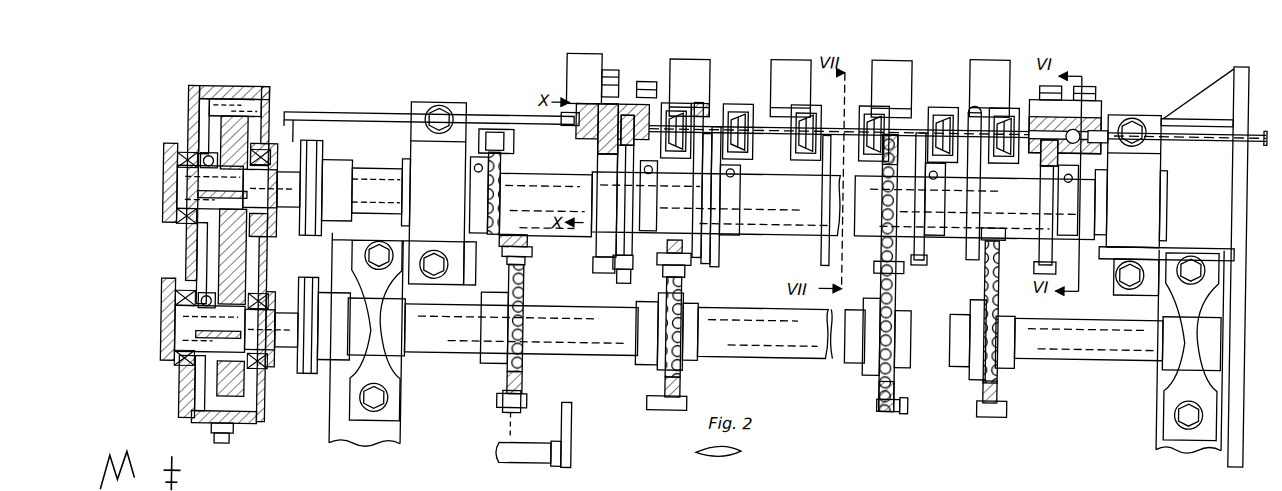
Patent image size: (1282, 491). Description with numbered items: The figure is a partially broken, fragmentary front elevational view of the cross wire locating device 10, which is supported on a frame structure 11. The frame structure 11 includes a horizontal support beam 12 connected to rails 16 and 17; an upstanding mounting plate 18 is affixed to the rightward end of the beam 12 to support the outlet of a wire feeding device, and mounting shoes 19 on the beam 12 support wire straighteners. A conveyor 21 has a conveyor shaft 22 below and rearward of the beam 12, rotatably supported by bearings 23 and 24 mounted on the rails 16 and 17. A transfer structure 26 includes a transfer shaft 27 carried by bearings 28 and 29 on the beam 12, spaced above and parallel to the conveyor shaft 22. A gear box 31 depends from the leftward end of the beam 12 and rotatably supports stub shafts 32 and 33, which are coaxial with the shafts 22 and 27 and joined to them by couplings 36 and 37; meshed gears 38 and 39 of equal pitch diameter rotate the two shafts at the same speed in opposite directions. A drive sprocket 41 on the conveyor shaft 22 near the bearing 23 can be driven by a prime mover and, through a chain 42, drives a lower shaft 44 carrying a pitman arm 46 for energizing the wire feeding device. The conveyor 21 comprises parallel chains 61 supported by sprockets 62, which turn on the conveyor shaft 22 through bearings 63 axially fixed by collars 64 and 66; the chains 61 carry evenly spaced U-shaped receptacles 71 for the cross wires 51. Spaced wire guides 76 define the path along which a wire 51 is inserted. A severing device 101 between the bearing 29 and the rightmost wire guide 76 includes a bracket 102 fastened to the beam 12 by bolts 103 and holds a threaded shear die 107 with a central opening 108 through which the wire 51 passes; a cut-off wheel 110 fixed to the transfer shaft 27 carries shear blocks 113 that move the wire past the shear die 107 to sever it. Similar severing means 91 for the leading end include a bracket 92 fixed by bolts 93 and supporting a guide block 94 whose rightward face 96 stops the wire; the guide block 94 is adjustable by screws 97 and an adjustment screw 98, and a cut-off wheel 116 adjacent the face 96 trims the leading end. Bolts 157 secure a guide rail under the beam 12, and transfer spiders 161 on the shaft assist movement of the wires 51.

The cross wire locating device 10 is at (1178, 52).
The frame structure 11 is at (332, 106).
The support beam 12 is at (372, 117).
The rail 16 is at (340, 428).
The rail 17 is at (1166, 450).
The mounting plate 18 is at (1247, 418).
The mounting shoes 19 is at (583, 47).
The conveyor 21 is at (1054, 368).
The conveyor shaft 22 is at (762, 348).
The bearing 23 is at (402, 378).
The bearing 24 is at (1190, 380).
The transfer structure 26 is at (530, 137).
The transfer shaft 27 is at (375, 175).
The bearing 28 is at (425, 98).
The bearing 29 is at (1160, 104).
The gear box 31 is at (238, 84).
The stub shaft 32 is at (177, 320).
The stub shaft 33 is at (177, 188).
The coupling 36 is at (312, 372).
The coupling 37 is at (309, 236).
The gear 38 is at (215, 375).
The gear 39 is at (235, 142).
The drive sprocket 41 is at (514, 372).
The chain 42 is at (517, 404).
The lower shaft 44 is at (513, 450).
The pitman arm 46 is at (575, 412).
The cross wire 51 is at (766, 98).
The conveyor chain 61 is at (889, 400).
The sprocket 62 is at (898, 371).
The bearing 63 is at (872, 355).
The collar 64 is at (854, 352).
The collar 66 is at (908, 330).
The receptacle 71 is at (912, 398).
The wire guide 76 is at (946, 102).
The severing means 91 is at (590, 140).
The bracket 92 is at (669, 95).
The bolts 93 is at (645, 74).
The guide block 94 is at (599, 156).
The rightward face 96 is at (622, 190).
The screws 97 is at (615, 63).
The adjustment screw 98 is at (567, 126).
The severing device 101 is at (1100, 78).
The bracket 102 is at (1063, 86).
The bolts 103 is at (1078, 104).
The shear die 107 is at (1104, 122).
The central opening 108 is at (1078, 122).
The cut-off wheel 110 is at (1053, 252).
The shear block 113 is at (1050, 133).
The cut-off wheel 116 is at (626, 276).
The bolts 157 is at (919, 252).
The transfer spider 161 is at (822, 248).